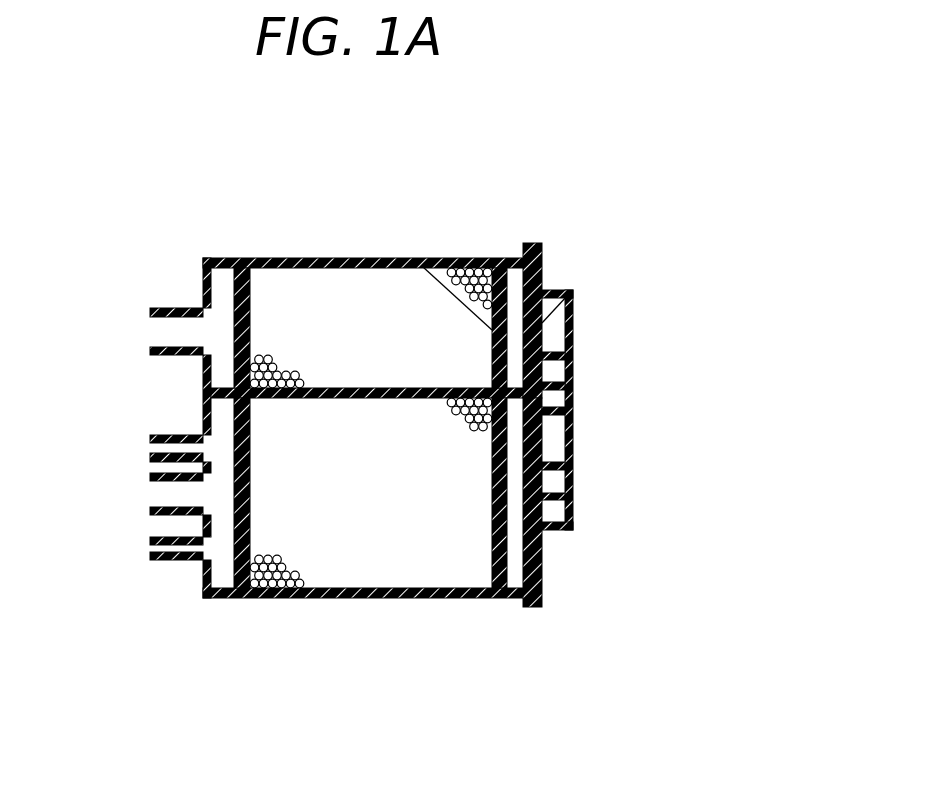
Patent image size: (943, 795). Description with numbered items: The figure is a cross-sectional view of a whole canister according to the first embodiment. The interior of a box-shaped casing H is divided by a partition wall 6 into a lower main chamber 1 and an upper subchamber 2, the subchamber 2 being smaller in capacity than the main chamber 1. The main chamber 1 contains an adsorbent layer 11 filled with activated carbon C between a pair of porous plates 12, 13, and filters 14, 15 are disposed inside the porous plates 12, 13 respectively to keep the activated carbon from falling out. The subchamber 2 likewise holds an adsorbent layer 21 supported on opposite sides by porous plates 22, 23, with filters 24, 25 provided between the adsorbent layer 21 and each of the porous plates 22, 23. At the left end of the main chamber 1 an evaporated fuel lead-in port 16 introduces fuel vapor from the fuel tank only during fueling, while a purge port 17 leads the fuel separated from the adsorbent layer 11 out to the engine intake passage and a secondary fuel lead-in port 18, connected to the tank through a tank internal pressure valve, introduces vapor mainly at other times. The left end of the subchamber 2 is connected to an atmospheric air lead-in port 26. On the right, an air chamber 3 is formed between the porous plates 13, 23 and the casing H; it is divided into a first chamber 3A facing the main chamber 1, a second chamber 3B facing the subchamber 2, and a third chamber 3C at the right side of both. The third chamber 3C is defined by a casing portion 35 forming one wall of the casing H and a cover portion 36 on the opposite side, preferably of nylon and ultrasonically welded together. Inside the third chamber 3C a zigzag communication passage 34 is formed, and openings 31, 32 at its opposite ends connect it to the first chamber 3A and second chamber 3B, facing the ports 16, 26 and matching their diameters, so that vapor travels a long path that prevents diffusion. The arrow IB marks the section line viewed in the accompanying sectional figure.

The main chamber 1 is at (442, 590).
The subchamber 2 is at (328, 258).
The air chamber 3 is at (604, 355).
The first chamber 3A is at (526, 540).
The second chamber 3B is at (524, 287).
The third chamber 3C is at (557, 330).
The partition wall 6 is at (222, 382).
The adsorbent layer 11 is at (400, 513).
The porous plate 12 is at (195, 593).
The porous plate 13 is at (525, 540).
The filter 14 is at (250, 497).
The filter 15 is at (490, 528).
The evaporated fuel lead-in port 16 is at (160, 498).
The purge port 17 is at (160, 547).
The secondary fuel lead-in port 18 is at (160, 448).
The adsorbent layer 21 is at (383, 310).
The porous plate 22 is at (235, 298).
The porous plate 23 is at (524, 247).
The filter 24 is at (247, 280).
The filter 25 is at (421, 258).
The atmospheric air lead-in port 26 is at (160, 330).
The opening 31 is at (573, 497).
The opening 32 is at (570, 292).
The communication passage 34 is at (557, 370).
The casing portion 35 is at (542, 583).
The cover portion 36 is at (573, 466).
The activated carbon C is at (240, 325).
The casing H is at (357, 605).
The section line IB is at (618, 441).